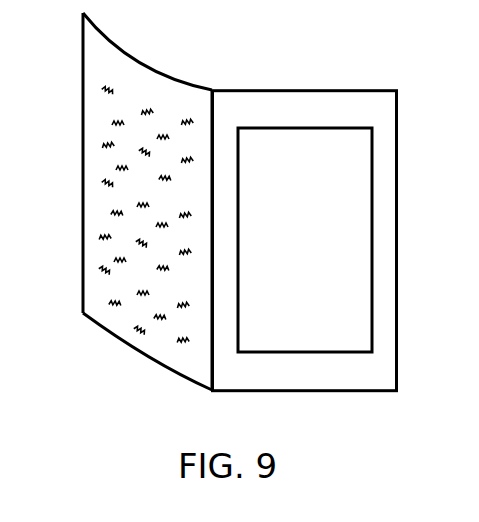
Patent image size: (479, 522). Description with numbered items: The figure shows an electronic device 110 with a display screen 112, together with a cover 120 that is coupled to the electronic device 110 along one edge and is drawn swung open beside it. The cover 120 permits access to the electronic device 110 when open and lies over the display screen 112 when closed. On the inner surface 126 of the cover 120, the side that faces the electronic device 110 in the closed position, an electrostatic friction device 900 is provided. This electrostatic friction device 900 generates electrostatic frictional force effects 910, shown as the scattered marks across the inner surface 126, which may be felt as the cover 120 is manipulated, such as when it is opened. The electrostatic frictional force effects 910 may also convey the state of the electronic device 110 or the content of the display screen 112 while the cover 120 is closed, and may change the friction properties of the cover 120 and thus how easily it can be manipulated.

The electrostatic friction device 900 is at (146, 72).
The electrostatic frictional force effects 910 is at (105, 232).
The electronic device 110 is at (383, 91).
The display screen 112 is at (322, 249).
The cover 120 is at (138, 362).
The inner surface 126 is at (193, 367).